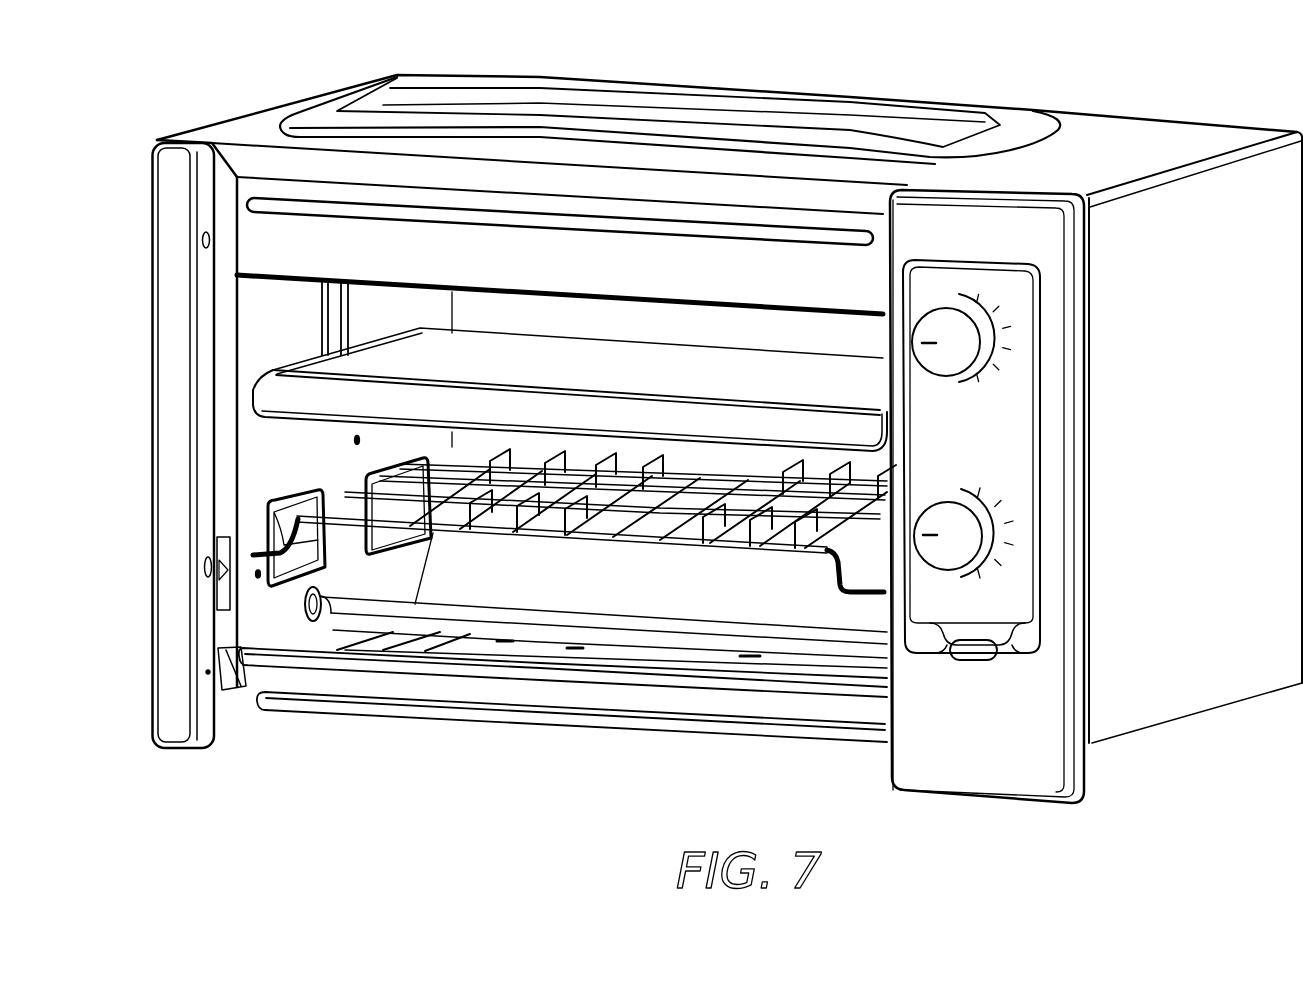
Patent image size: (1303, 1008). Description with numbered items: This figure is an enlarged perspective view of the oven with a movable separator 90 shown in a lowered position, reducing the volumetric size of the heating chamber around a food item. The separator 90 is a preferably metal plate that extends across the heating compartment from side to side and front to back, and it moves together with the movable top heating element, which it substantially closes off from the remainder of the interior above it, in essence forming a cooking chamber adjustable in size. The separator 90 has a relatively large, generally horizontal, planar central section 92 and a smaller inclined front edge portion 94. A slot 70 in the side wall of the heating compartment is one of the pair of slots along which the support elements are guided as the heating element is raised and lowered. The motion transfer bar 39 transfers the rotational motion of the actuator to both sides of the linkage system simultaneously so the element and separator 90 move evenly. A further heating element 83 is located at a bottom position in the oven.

The slot 70 is at (340, 318).
The central section 92 is at (600, 371).
The front edge portion 94 is at (567, 421).
The separator 90 is at (333, 432).
The motion transfer bar 39 is at (568, 617).
The heating element 83 is at (450, 636).